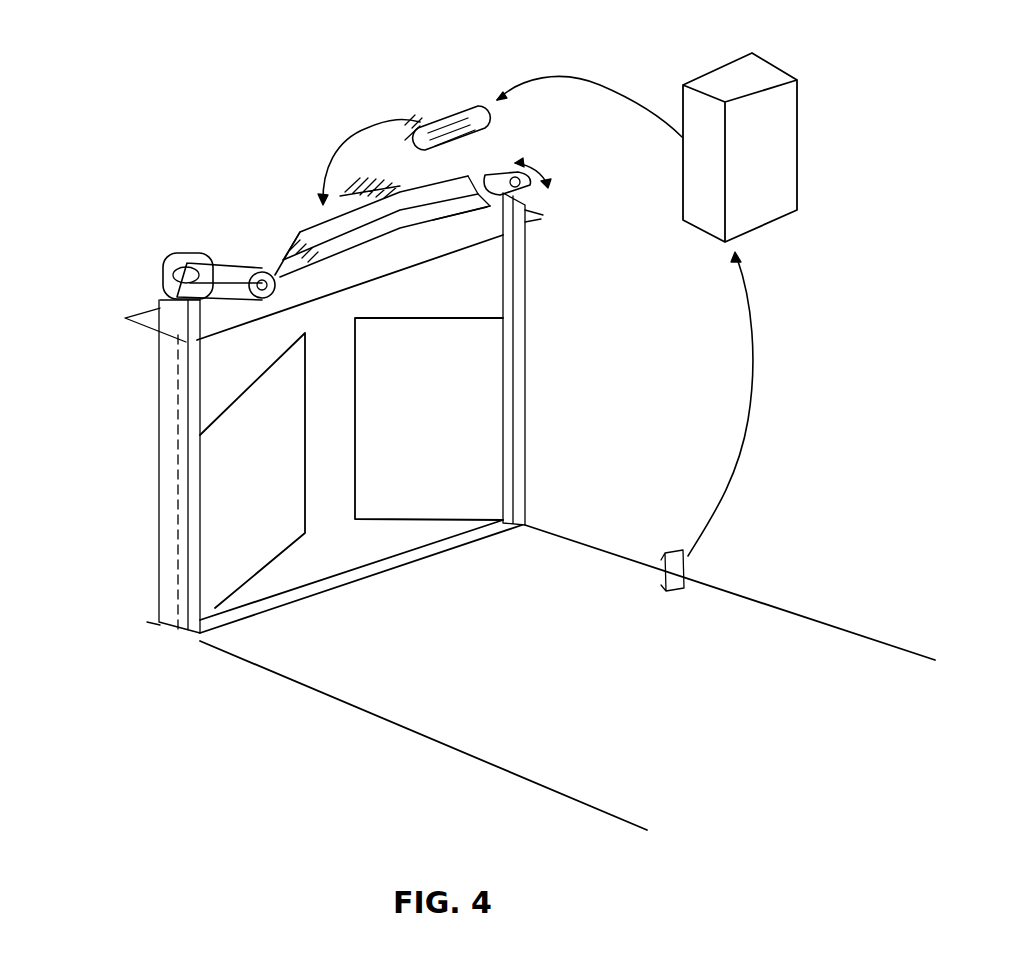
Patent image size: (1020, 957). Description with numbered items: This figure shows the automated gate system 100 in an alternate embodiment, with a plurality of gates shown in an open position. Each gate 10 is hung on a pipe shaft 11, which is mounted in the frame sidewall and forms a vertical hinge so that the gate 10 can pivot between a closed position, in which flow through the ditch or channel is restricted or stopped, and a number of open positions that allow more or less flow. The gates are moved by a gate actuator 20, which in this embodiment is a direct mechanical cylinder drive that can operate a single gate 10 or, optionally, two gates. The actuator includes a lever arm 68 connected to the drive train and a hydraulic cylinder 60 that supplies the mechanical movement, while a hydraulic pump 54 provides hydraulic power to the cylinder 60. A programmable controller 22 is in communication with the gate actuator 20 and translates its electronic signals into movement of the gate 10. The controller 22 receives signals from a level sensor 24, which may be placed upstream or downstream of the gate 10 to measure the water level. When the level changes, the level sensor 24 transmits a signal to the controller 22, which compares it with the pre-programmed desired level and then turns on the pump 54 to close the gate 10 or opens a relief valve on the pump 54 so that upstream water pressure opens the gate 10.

The system 100 is at (240, 181).
The gate actuator 20 is at (323, 147).
The hydraulic pump 54 is at (483, 102).
The hydraulic cylinder 60 is at (318, 232).
The lever arm 68 is at (205, 266).
The pipe shaft 11 is at (519, 215).
The gate 10 is at (256, 491).
The programmable controller 22 is at (757, 76).
The level sensor 24 is at (690, 556).